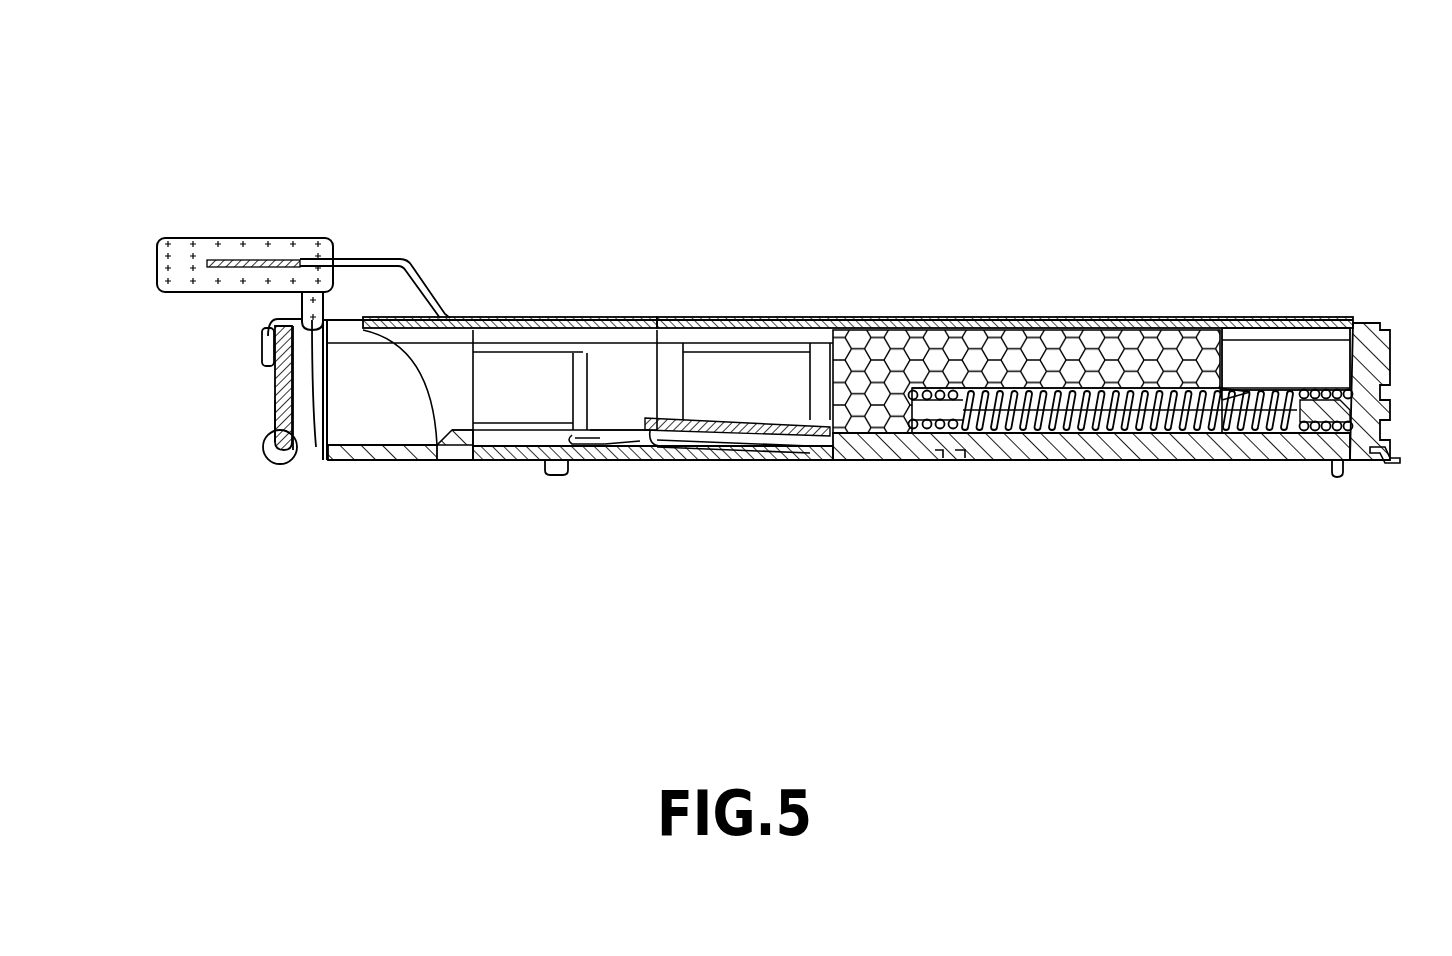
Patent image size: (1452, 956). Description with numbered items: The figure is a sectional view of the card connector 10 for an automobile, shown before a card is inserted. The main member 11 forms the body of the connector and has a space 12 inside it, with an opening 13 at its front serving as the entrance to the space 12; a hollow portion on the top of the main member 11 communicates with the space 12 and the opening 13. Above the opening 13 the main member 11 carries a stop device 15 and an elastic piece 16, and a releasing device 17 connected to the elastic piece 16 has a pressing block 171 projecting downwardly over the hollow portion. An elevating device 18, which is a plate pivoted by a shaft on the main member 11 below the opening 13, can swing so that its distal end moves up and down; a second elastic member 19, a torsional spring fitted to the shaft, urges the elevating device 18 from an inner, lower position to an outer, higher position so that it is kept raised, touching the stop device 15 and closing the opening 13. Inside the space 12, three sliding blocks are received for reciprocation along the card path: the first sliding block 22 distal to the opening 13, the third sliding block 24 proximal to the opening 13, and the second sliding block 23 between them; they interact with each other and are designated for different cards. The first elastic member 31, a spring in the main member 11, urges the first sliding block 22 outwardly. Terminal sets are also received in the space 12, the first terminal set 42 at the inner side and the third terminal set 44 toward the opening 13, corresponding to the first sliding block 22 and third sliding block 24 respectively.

The card connector 10 is at (478, 527).
The main member 11 is at (525, 462).
The space 12 is at (1273, 367).
The opening 13 is at (257, 395).
The stop device 15 is at (260, 333).
The elastic piece 16 is at (367, 257).
The releasing device 17 is at (225, 238).
The pressing block 171 is at (316, 447).
The elevating device 18 is at (273, 412).
The second elastic member 19 is at (280, 466).
The first sliding block 22 is at (1233, 385).
The second sliding block 23 is at (763, 318).
The third sliding block 24 is at (605, 318).
The first elastic member 31 is at (1088, 430).
The first terminal set 42 is at (1297, 390).
The third terminal set 44 is at (697, 440).